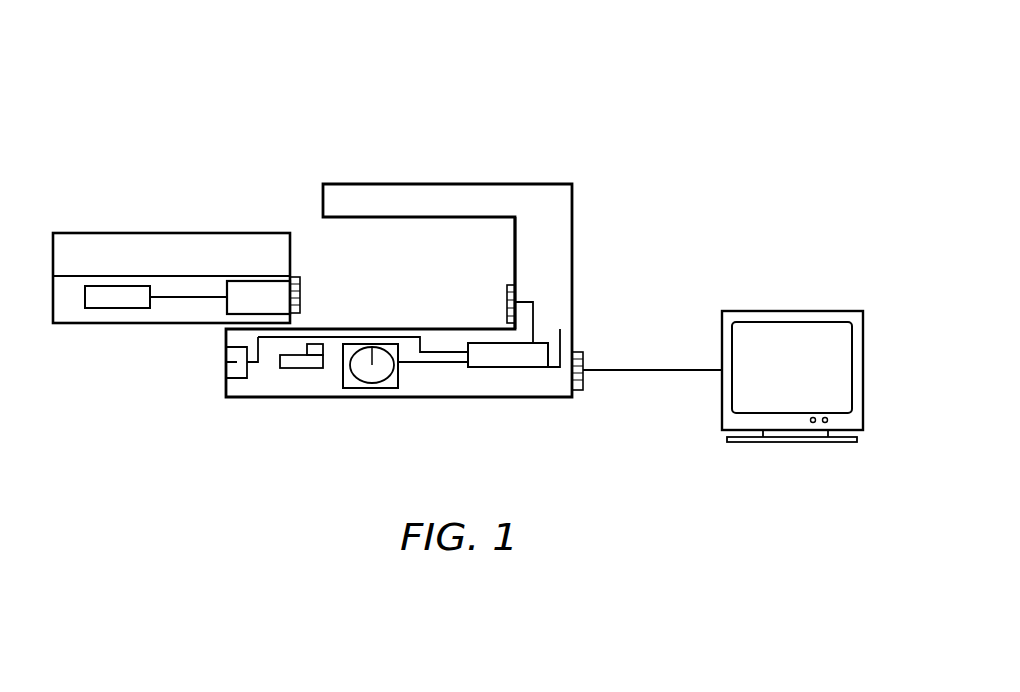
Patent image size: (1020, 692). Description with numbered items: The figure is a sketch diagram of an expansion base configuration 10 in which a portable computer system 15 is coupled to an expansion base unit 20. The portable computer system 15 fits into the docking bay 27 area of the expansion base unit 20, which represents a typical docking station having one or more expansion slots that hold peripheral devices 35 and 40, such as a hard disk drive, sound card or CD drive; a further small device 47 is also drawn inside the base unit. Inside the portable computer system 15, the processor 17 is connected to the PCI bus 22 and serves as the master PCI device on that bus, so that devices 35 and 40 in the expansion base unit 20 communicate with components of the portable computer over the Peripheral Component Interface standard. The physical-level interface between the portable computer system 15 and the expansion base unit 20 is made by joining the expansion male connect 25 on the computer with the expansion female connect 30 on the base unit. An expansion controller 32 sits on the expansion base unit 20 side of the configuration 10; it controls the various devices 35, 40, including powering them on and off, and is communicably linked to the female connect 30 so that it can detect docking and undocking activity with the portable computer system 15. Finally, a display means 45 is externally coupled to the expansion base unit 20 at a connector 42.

The expansion base configuration 10 is at (684, 155).
The portable computer system 15 is at (118, 237).
The processor 17 is at (118, 303).
The expansion base unit 20 is at (365, 184).
The PCI bus 22 is at (258, 287).
The expansion male connect 25 is at (346, 307).
The docking bay 27 is at (462, 242).
The expansion female connect 30 is at (507, 285).
The expansion controller 32 is at (518, 360).
The peripheral device 35 is at (381, 370).
The peripheral device 40 is at (237, 364).
The connector 42 is at (615, 347).
The display means 45 is at (790, 311).
The peripheral device 47 is at (297, 360).